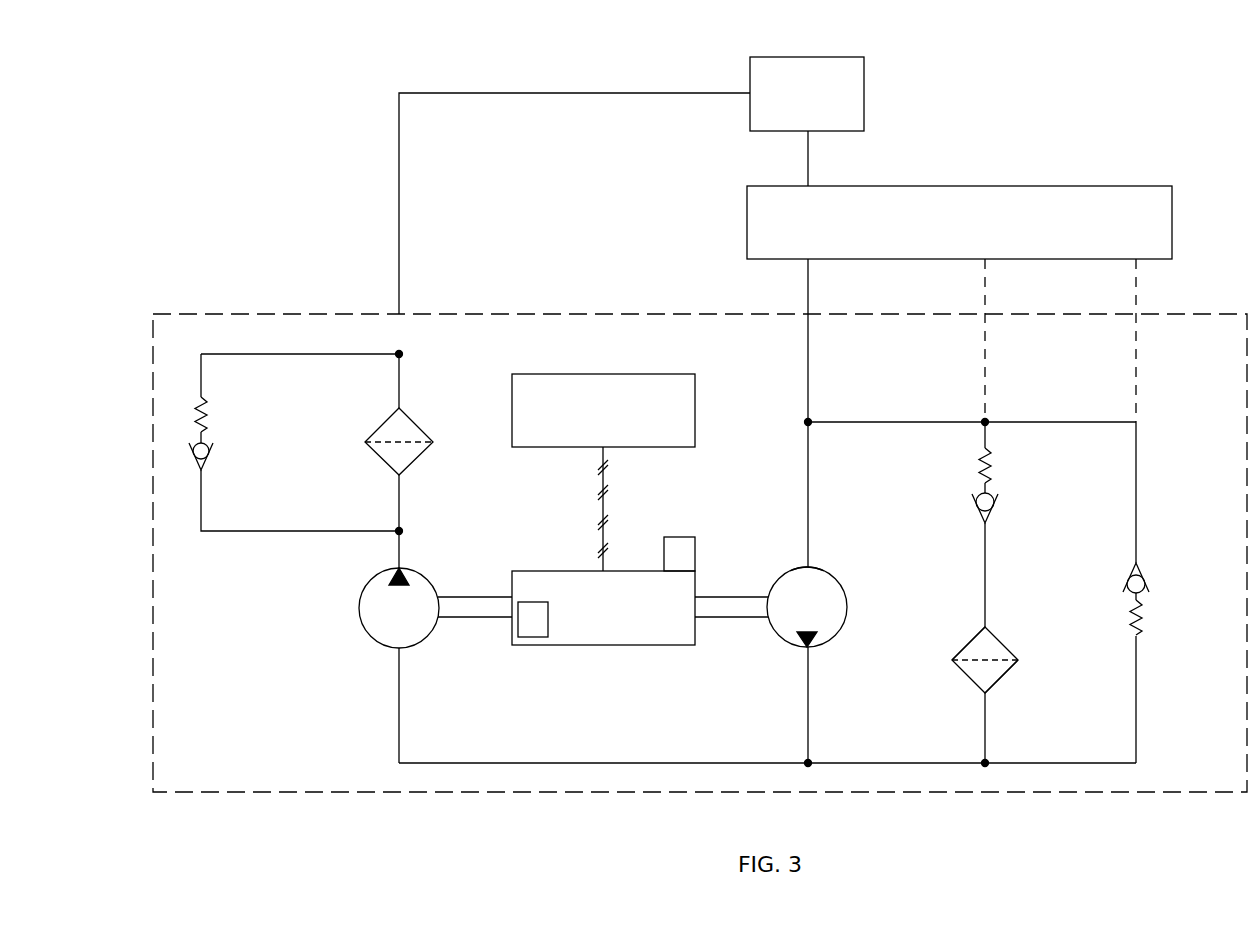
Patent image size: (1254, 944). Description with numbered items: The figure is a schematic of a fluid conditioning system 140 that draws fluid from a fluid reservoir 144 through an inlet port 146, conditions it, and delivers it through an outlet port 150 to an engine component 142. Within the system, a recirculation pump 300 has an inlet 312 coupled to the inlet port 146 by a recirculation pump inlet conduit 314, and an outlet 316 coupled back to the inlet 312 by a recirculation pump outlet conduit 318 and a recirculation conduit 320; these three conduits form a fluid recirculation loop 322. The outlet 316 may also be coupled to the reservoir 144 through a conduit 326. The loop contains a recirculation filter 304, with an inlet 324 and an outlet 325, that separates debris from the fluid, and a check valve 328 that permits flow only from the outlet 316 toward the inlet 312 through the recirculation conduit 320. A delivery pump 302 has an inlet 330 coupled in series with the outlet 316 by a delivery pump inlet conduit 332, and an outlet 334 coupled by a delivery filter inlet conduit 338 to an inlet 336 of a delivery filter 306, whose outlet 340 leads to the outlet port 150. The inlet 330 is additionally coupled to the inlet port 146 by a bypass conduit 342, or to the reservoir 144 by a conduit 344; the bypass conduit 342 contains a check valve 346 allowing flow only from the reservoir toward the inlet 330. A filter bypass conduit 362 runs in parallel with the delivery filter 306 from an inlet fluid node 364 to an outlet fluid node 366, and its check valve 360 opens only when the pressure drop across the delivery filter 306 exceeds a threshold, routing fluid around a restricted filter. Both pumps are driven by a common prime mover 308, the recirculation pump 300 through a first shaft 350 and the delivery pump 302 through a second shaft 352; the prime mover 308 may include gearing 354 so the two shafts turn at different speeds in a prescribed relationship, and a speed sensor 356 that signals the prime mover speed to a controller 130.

The controller 130 is at (586, 420).
The fluid conditioning system 140 is at (256, 282).
The engine component 142 is at (790, 108).
The fluid reservoir 144 is at (943, 230).
The inlet port 146 is at (803, 311).
The outlet port 150 is at (395, 311).
The recirculation pump 300 is at (768, 632).
The delivery pump 302 is at (356, 609).
The recirculation filter 304 is at (963, 680).
The delivery filter 306 is at (380, 413).
The prime mover 308 is at (586, 618).
The inlet 312 is at (803, 567).
The recirculation pump inlet conduit 314 is at (805, 456).
The outlet 316 is at (809, 649).
The recirculation pump outlet conduit 318 is at (806, 719).
The recirculation conduit 320 is at (988, 563).
The fluid recirculation loop 322 is at (880, 470).
The inlet 324 is at (988, 695).
The outlet 325 is at (976, 625).
The conduit 326 is at (988, 392).
The check valve 328 is at (993, 507).
The inlet 330 is at (397, 650).
The delivery pump inlet conduit 332 is at (465, 765).
The outlet 334 is at (396, 570).
The inlet 336 is at (400, 476).
The delivery filter inlet conduit 338 is at (398, 508).
The outlet 340 is at (401, 409).
The bypass conduit 342 is at (1138, 691).
The conduit 344 is at (1138, 291).
The check valve 346 is at (1146, 578).
The first shaft 350 is at (738, 595).
The second shaft 352 is at (474, 619).
The gearing 354 is at (532, 638).
The speed sensor 356 is at (679, 535).
The check valve 360 is at (211, 459).
The filter bypass conduit 362 is at (236, 533).
The inlet fluid node 364 is at (405, 531).
The outlet fluid node 366 is at (405, 355).